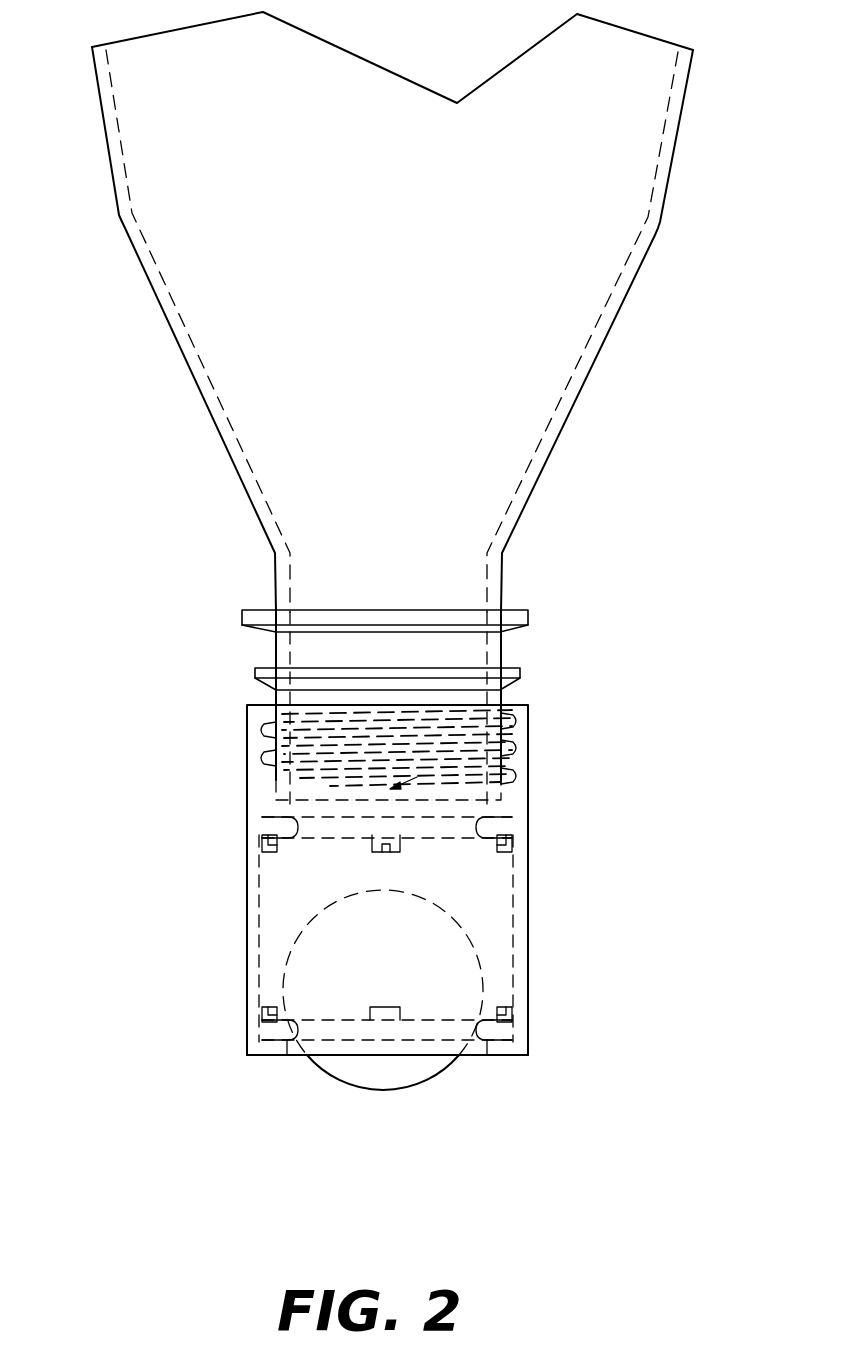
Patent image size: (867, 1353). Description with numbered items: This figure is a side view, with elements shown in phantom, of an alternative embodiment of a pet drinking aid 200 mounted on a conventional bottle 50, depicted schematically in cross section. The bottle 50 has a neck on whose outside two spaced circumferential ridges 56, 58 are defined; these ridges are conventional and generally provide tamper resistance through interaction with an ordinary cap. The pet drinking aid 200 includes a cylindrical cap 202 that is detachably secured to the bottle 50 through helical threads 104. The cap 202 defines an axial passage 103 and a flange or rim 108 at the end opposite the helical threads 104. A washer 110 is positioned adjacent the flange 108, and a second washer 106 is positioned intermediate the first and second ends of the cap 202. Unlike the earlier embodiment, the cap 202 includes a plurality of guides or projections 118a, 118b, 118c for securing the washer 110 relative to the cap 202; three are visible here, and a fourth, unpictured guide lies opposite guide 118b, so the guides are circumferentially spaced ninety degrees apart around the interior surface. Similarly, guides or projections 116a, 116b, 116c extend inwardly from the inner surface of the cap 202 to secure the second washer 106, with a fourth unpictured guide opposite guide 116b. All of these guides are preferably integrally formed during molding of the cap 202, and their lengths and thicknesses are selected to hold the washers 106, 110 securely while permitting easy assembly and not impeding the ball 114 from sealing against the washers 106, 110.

The bottle 50 is at (608, 353).
The circumferential ridge 56 is at (530, 614).
The circumferential ridge 58 is at (520, 670).
The pet drinking aid 200 is at (220, 791).
The cylindrical cap 202 is at (247, 820).
The helical threads 104 is at (513, 733).
The second washer 106 is at (512, 820).
The axial passage 103 is at (303, 888).
The guide or projection 116a is at (297, 850).
The guide or projection 116b is at (403, 850).
The guide or projection 116c is at (512, 843).
The ball 114 is at (422, 953).
The guide or projection 118a is at (267, 1013).
The guide or projection 118b is at (393, 1017).
The guide or projection 118c is at (512, 1012).
The washer 110 is at (497, 1033).
The flange or rim 108 is at (495, 1055).